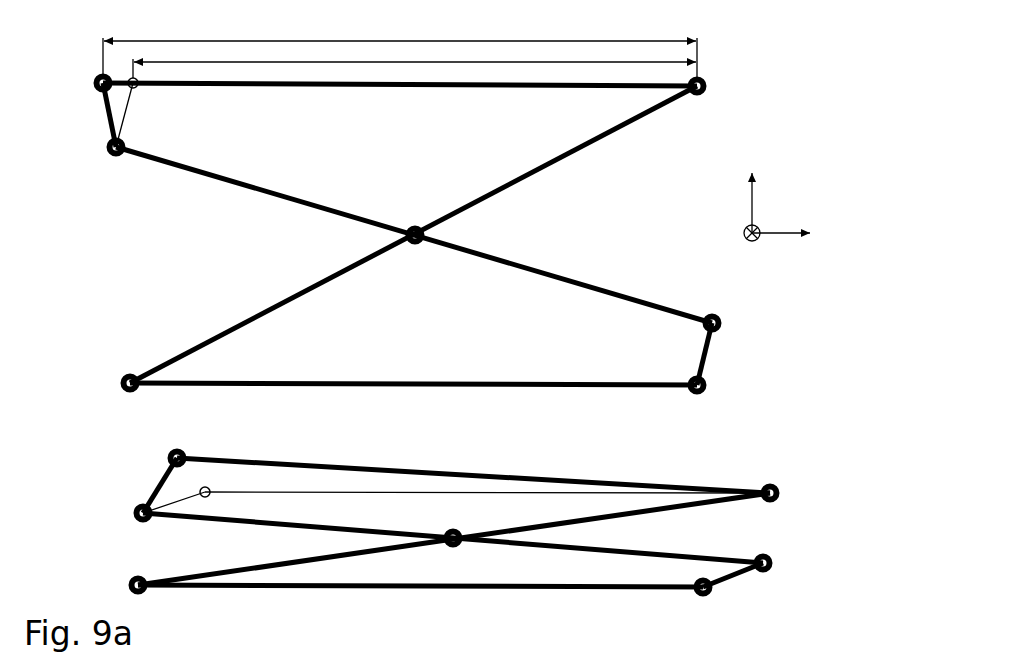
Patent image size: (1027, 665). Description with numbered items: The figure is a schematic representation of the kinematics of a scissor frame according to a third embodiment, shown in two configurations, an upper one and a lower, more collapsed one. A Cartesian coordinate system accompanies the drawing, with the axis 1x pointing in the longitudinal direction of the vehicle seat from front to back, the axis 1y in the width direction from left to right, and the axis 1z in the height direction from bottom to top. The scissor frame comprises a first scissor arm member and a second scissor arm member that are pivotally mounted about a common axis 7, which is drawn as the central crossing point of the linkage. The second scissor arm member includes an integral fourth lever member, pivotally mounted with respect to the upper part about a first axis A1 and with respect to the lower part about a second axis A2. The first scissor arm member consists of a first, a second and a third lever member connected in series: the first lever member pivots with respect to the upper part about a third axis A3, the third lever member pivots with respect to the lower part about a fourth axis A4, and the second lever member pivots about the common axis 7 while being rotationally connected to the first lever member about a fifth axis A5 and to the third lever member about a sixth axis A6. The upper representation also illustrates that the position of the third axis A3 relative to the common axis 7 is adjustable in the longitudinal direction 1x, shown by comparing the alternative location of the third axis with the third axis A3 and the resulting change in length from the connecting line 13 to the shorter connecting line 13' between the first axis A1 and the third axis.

The first axis A1 is at (706, 89).
The second axis A2 is at (120, 383).
The third axis A3 is at (168, 458).
The fourth axis A4 is at (706, 389).
The fifth axis A5 is at (107, 148).
The sixth axis A6 is at (722, 322).
The common axis 7 is at (415, 226).
The connecting line 13 is at (400, 45).
The connecting line 13' is at (414, 44).
The longitudinal direction axis 1x is at (790, 234).
The width direction axis 1y is at (746, 242).
The height direction axis 1z is at (751, 198).